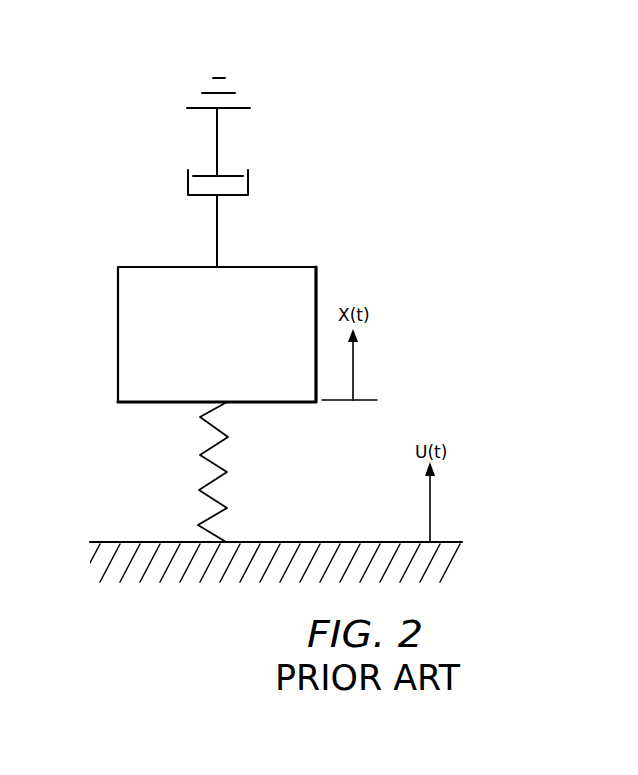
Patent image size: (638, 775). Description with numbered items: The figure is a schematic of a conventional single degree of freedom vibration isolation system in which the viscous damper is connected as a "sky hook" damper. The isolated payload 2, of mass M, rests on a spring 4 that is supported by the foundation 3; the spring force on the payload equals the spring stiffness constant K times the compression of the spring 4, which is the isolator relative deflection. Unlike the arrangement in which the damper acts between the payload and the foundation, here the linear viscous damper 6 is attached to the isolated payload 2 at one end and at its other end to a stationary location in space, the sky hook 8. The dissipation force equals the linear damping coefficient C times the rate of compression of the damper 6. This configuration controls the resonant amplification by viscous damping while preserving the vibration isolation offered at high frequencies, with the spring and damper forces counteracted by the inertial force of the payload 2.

The isolated payload 2 is at (147, 266).
The foundation 3 is at (367, 541).
The spring 4 is at (207, 480).
The linear viscous damper 6 is at (187, 190).
The sky hook 8 is at (236, 91).